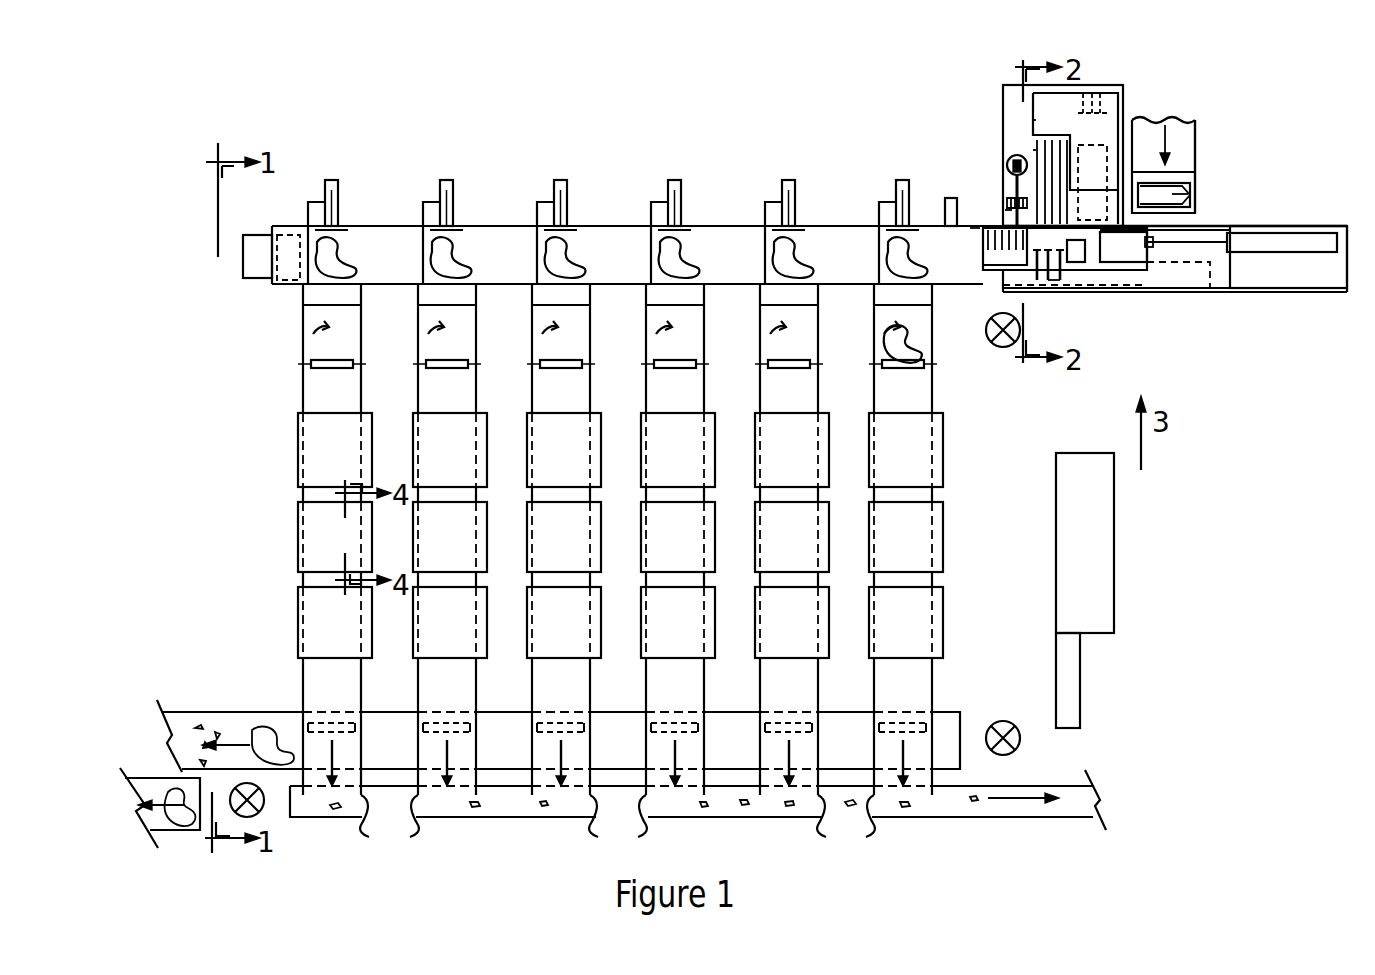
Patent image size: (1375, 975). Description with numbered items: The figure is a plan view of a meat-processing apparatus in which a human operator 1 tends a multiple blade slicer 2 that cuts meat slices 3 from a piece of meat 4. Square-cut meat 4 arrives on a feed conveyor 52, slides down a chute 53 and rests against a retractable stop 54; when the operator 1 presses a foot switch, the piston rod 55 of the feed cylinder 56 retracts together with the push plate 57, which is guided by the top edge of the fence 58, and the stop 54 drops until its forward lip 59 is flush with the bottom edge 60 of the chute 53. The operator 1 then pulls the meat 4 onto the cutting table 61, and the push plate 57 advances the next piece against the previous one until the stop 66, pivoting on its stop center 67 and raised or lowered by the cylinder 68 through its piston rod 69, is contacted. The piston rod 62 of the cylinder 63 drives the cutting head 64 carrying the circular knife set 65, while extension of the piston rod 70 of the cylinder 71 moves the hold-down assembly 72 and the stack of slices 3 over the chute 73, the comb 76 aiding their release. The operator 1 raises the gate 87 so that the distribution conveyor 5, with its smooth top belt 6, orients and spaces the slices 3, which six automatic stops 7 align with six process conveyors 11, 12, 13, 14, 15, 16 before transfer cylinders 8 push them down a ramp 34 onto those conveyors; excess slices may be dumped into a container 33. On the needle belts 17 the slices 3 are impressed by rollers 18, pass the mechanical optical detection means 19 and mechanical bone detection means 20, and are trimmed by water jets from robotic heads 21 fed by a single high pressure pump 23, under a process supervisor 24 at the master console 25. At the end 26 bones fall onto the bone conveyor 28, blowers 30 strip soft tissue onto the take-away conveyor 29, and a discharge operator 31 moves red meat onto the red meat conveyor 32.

The human operator 1 is at (990, 340).
The multiple blade slicer 2 is at (1108, 86).
The meat slices 3 is at (922, 280).
The piece of meat 4 is at (1096, 288).
The distribution conveyor 5 is at (832, 226).
The top belt 6 is at (628, 254).
The automatic stops 7 is at (879, 202).
The transfer cylinders 8 is at (913, 185).
The process conveyor 11 is at (964, 394).
The process conveyor 12 is at (850, 394).
The process conveyor 13 is at (736, 394).
The process conveyor 14 is at (622, 394).
The process conveyor 15 is at (508, 394).
The process conveyor 16 is at (302, 390).
The needle conveyor belts 17 is at (879, 325).
The rollers 18 is at (881, 360).
The mechanical optical detection means 19 is at (298, 438).
The mechanical bone detection means 20 is at (298, 525).
The robotic heads 21 is at (298, 618).
The high pressure pump 23 is at (1056, 546).
The process supervisor 24 is at (1021, 742).
The master console 25 is at (1056, 638).
The end of process conveyors 26 is at (617, 819).
The bone conveyor 28 is at (1040, 818).
The take-away conveyor 29 is at (962, 728).
The blowers 30 is at (914, 728).
The discharge operator 31 is at (264, 806).
The red meat conveyor 32 is at (120, 778).
The container 33 is at (246, 262).
The ramp 34 is at (617, 295).
The feed conveyor 52 is at (1188, 120).
The chute 53 is at (1200, 158).
The retractable stop 54 is at (1192, 184).
The piston rod 55 is at (1190, 260).
The feed cylinder 56 is at (1334, 224).
The push plate 57 is at (1168, 250).
The fence 58 is at (1190, 227).
The forward lip 59 is at (1150, 262).
The bottom edge 60 is at (1190, 198).
The cutting table 61 is at (1354, 284).
The piston rod 62 is at (1111, 104).
The hydraulic or pneumatic cylinder 63 is at (1105, 126).
The cutting head 64 is at (1036, 106).
The circular knife set 65 is at (1034, 129).
The stop 66 is at (1066, 264).
The stop center 67 is at (1002, 220).
The hydraulic or pneumatic cylinder 68 is at (1036, 142).
The piston rod 69 is at (1008, 158).
The piston rod 70 is at (1106, 276).
The hydraulic or pneumatic cylinder 71 is at (1154, 248).
The hold-down assembly 72 is at (1084, 262).
The chute 73 is at (974, 229).
The comb 76 is at (1004, 250).
The gate 87 is at (932, 192).